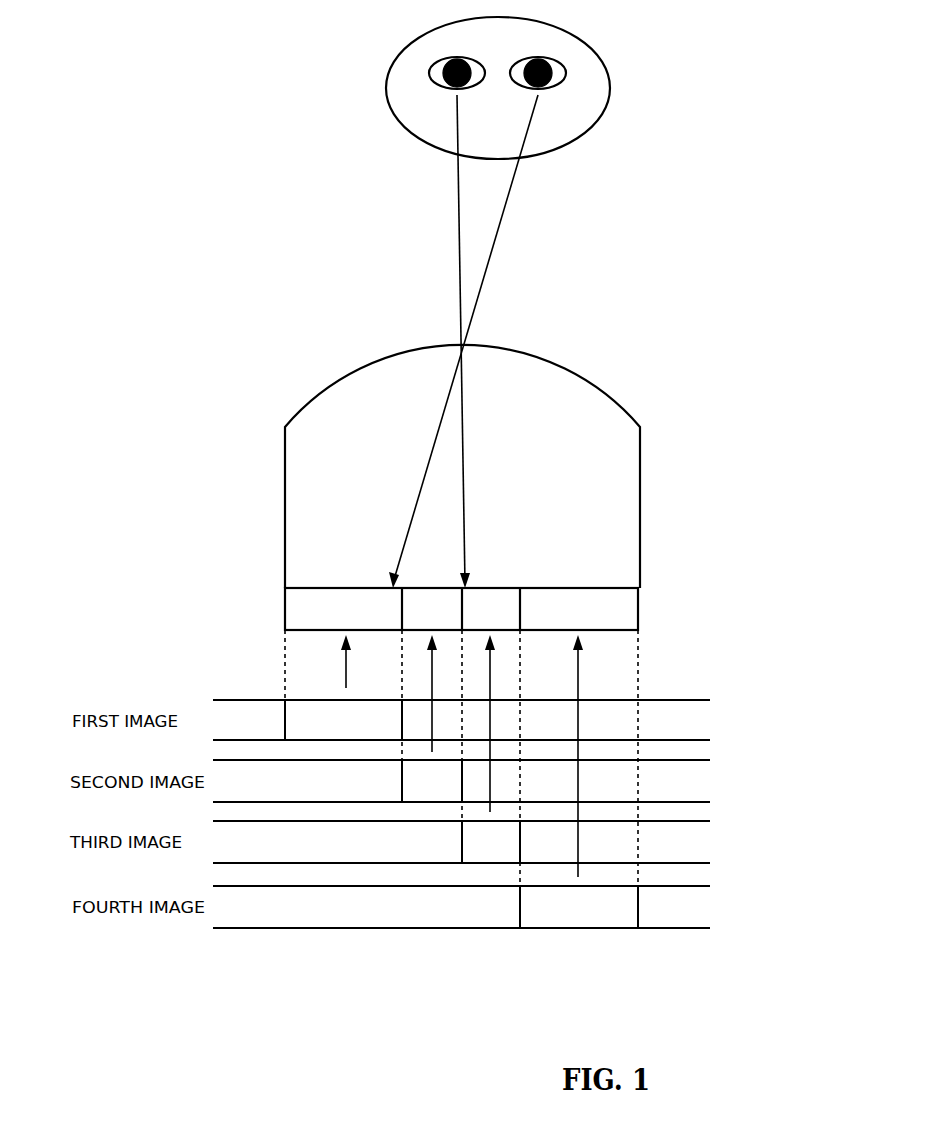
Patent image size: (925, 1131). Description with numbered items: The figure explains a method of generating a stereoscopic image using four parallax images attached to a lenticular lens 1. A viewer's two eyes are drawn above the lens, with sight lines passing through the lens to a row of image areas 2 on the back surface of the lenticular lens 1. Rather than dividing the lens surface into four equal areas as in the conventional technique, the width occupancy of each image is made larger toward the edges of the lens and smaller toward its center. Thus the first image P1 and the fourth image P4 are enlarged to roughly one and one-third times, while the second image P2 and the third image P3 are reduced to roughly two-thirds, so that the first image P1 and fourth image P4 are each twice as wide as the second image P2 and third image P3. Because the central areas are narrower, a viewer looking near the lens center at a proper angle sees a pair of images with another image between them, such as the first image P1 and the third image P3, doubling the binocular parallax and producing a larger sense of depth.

The lenticular lens 1 is at (615, 487).
The pixel array / display section 2 is at (652, 607).
The first image P1 is at (343, 669).
The second image P2 is at (432, 700).
The third image P3 is at (491, 730).
The fourth image P4 is at (579, 763).